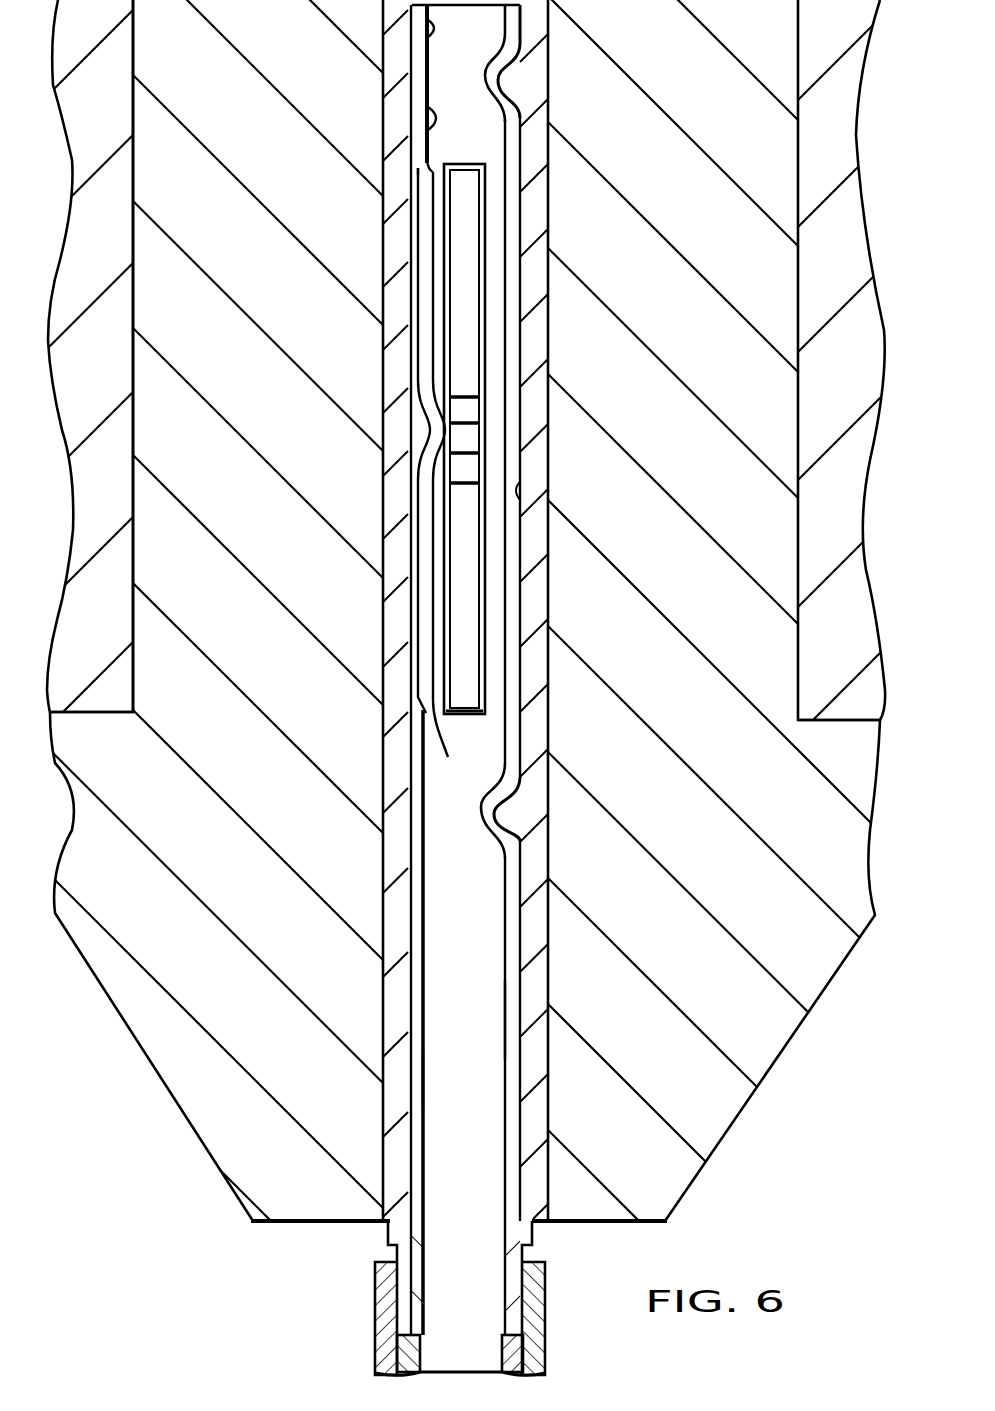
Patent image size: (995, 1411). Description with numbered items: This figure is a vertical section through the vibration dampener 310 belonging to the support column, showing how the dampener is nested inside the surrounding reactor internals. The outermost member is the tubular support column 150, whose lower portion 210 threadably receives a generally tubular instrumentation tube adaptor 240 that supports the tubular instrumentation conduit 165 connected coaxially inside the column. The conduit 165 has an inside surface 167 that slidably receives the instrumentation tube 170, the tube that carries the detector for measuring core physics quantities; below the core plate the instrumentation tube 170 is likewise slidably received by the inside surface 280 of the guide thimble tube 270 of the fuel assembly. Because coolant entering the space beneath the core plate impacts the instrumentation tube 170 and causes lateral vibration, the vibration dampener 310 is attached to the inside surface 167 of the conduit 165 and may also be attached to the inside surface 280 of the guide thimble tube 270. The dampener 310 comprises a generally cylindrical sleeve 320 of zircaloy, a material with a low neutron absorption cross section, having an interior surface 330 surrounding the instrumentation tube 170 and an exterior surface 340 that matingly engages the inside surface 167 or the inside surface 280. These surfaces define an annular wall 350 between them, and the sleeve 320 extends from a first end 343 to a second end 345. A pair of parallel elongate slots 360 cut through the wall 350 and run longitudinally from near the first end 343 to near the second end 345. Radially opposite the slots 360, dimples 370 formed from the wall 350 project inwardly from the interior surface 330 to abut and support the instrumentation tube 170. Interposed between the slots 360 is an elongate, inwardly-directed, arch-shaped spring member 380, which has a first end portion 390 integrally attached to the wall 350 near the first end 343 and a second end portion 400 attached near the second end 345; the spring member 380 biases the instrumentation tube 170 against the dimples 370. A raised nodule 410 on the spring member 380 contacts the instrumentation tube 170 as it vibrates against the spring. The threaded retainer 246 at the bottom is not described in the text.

The tubular support column 150 is at (808, 170).
The tubular instrumentation conduit 165 is at (537, 137).
The inside surface of conduit 167 is at (392, 34).
The instrumentation tube 170 is at (472, 1068).
The lower portion of support column 210 is at (808, 300).
The instrumentation tube adaptor 240 is at (133, 352).
The retaining nut 246 is at (520, 1347).
The guide thimble tube 270 is at (390, 280).
The inside surface of guide thimble tube 280 is at (527, 500).
The vibration dampener 310 is at (497, 228).
The cylindrical sleeve 320 is at (422, 72).
The interior surface of sleeve 330 is at (425, 108).
The exterior surface of sleeve 340 is at (132, 608).
The first end of sleeve 343 is at (423, 168).
The second end of sleeve 345 is at (512, 1020).
The annular wall 350 is at (508, 704).
The slots 360 is at (383, 200).
The dimples 370 is at (500, 72).
The spring member 380 is at (460, 580).
The first end portion of spring member 390 is at (433, 167).
The second end portion of spring member 400 is at (462, 717).
The raised nodule 410 is at (415, 410).